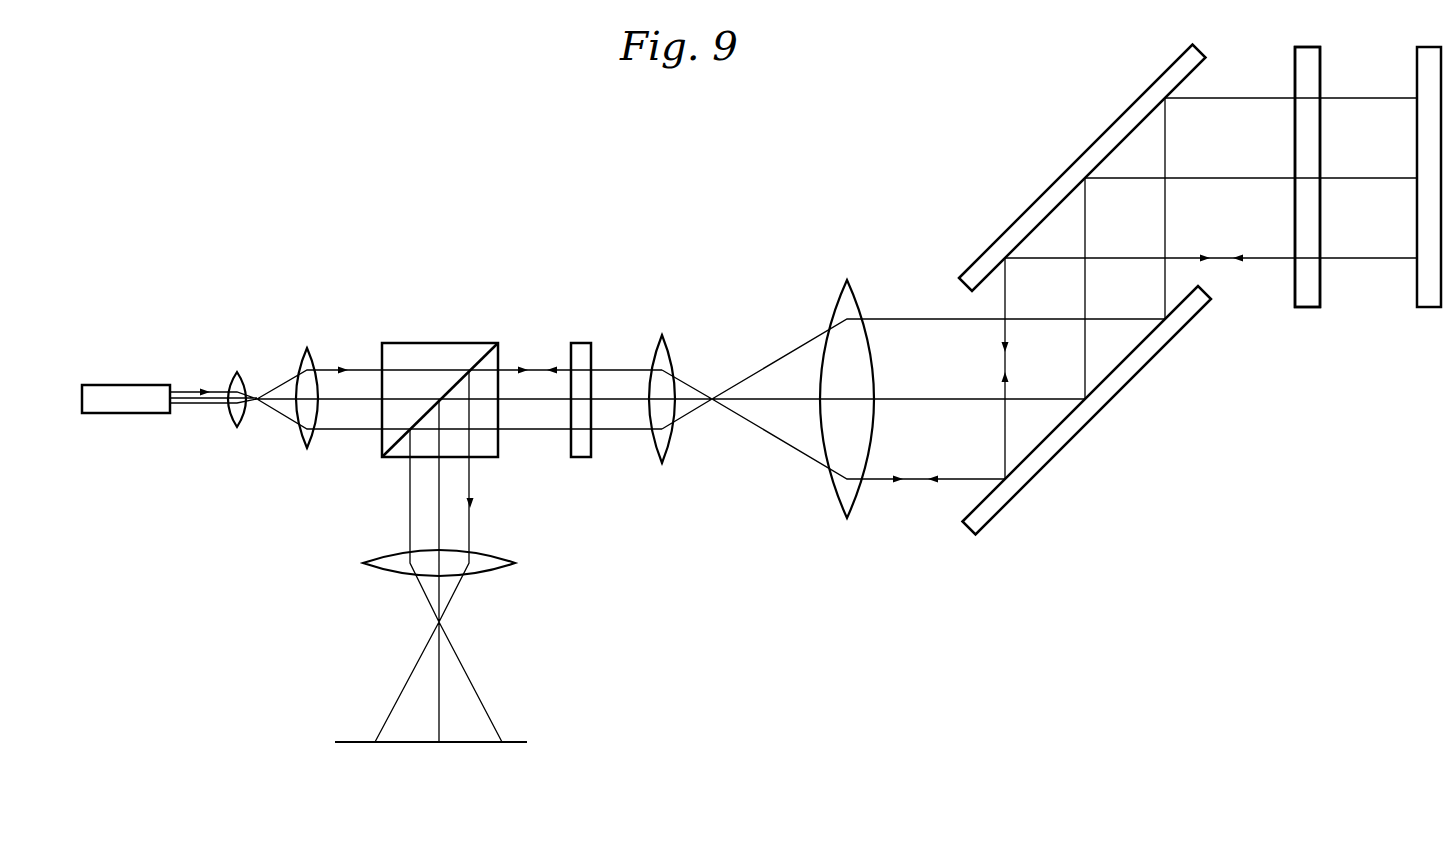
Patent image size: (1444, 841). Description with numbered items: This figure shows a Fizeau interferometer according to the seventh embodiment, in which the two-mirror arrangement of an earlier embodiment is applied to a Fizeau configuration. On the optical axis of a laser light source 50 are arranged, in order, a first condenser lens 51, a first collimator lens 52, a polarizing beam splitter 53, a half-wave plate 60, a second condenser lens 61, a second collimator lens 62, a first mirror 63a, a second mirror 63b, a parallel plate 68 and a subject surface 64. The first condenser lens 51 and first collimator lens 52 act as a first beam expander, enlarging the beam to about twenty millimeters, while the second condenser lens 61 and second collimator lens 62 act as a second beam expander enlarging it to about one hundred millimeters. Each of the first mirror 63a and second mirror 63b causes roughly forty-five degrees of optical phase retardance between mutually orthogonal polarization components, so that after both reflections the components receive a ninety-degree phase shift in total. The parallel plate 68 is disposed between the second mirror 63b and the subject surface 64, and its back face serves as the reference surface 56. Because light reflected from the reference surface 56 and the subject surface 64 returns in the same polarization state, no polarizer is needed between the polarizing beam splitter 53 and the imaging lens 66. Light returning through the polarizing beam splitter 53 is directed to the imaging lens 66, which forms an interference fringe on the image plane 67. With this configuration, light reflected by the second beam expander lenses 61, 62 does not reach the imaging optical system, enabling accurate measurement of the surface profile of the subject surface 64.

The laser light source 50 is at (127, 406).
The first condenser lens 51 is at (237, 422).
The first collimator lens 52 is at (307, 446).
The polarizing beam splitter 53 is at (389, 449).
The half-wave plate 60 is at (583, 452).
The second condenser lens 61 is at (662, 460).
The second collimator lens 62 is at (847, 516).
The first mirror 63a is at (969, 510).
The second mirror 63b is at (983, 286).
The parallel plate 68 is at (1305, 294).
The reference surface 56 is at (1322, 292).
The subject surface 64 is at (1413, 294).
The imaging lens 66 is at (515, 563).
The image plane 67 is at (527, 742).